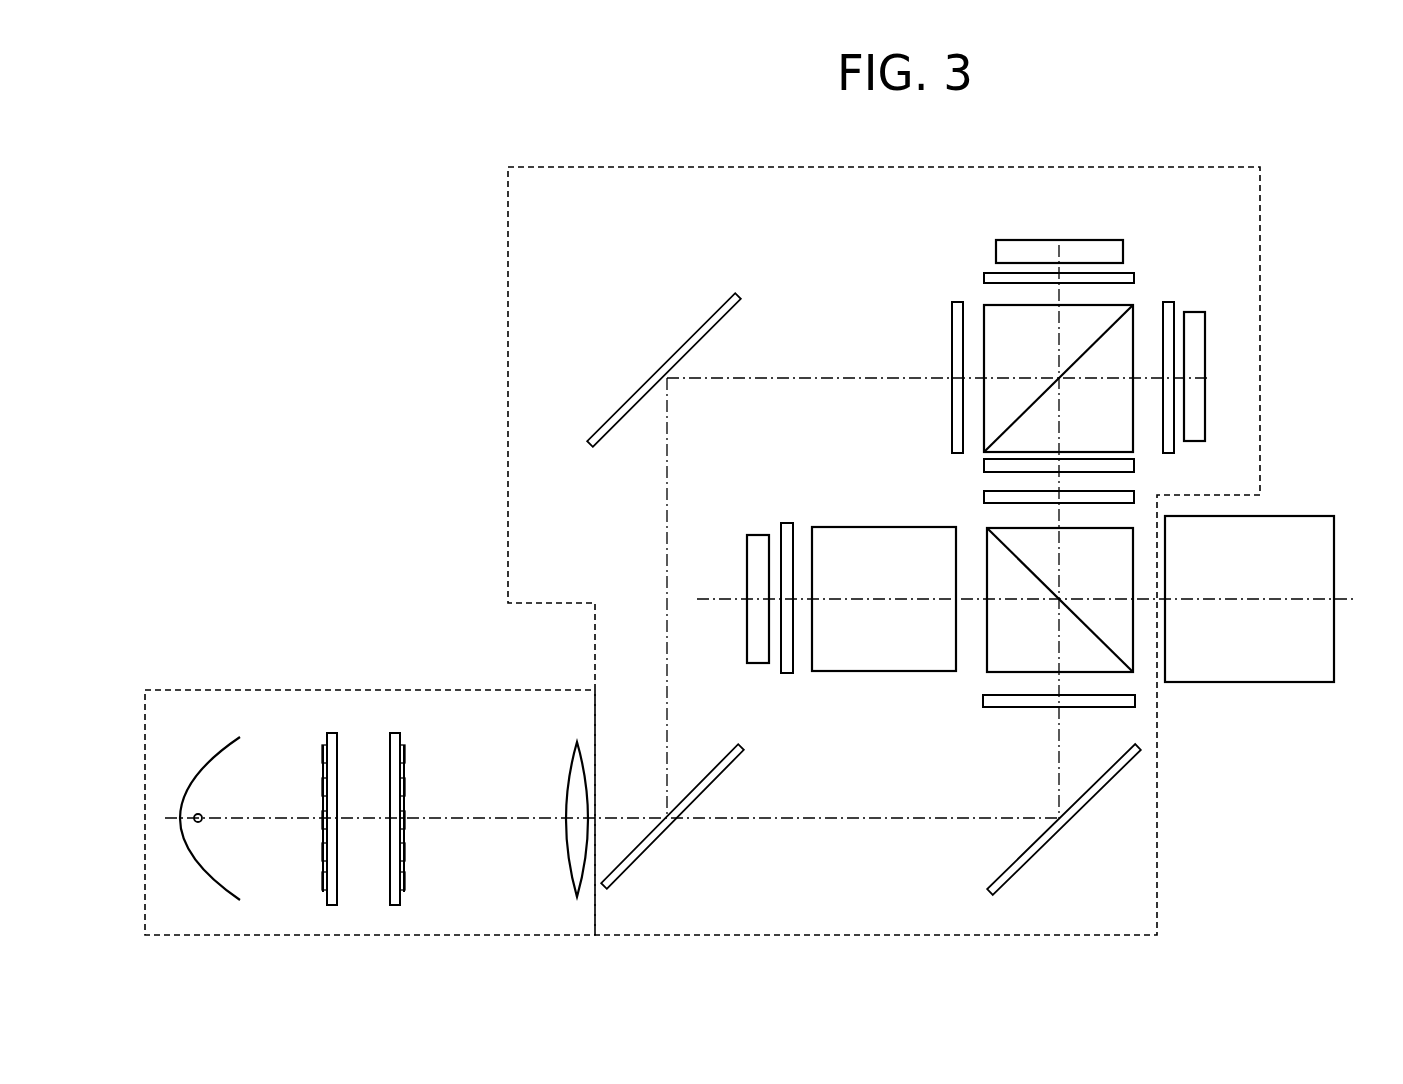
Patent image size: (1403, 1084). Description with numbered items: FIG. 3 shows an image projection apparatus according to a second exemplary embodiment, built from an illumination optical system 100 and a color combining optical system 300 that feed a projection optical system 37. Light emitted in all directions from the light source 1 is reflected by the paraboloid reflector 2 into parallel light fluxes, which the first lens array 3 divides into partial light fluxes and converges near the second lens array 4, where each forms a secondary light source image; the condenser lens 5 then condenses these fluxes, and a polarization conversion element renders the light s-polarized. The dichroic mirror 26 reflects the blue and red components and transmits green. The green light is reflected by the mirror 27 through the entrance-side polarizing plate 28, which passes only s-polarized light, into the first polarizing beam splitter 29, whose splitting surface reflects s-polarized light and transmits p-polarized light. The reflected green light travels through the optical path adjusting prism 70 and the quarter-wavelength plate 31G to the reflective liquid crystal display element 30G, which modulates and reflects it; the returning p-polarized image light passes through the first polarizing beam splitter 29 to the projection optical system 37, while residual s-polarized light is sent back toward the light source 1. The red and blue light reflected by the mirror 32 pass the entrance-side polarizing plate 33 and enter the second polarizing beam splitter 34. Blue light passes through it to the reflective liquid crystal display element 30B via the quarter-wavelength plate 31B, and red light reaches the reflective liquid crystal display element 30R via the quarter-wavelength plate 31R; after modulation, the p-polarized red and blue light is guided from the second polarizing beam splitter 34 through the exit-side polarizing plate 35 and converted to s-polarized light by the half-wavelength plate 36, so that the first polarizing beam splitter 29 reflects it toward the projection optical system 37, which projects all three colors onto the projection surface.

The light source 1 is at (202, 816).
The paraboloid reflector 2 is at (240, 899).
The first lens array 3 is at (327, 905).
The second lens array 4 is at (391, 905).
The condenser lens 5 is at (574, 880).
The dichroic mirror 26 is at (617, 880).
The mirror 27 is at (1022, 872).
The entrance-side polarizing plate 28 is at (999, 708).
The first polarizing beam splitter 29 is at (986, 672).
The reflective liquid crystal display element for red 30R is at (1083, 238).
The reflective liquid crystal display element for green 30G is at (747, 543).
The reflective liquid crystal display element for blue 30B is at (1203, 315).
The quarter-wavelength plate 31R is at (1128, 270).
The quarter-wavelength plate 31G is at (788, 673).
The quarter-wavelength plate 31B is at (1168, 303).
The mirror 32 is at (590, 445).
The entrance-side polarizing plate 33 is at (952, 448).
The second polarizing beam splitter 34 is at (985, 305).
The exit-side polarizing plate 35 is at (1135, 465).
The half-wavelength plate 36 is at (1137, 497).
The projection optical system 37 is at (1305, 516).
The optical path adjusting prism 70 is at (853, 672).
The illumination optical system 100 is at (338, 690).
The color combining optical system 300 is at (507, 210).